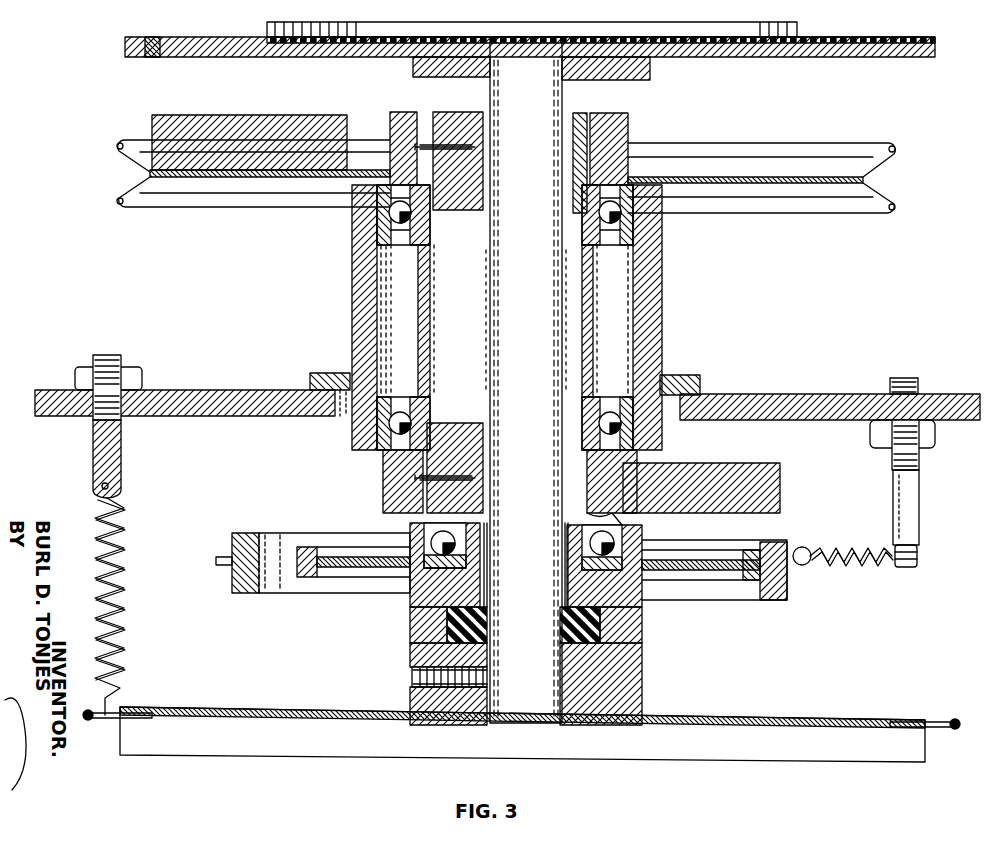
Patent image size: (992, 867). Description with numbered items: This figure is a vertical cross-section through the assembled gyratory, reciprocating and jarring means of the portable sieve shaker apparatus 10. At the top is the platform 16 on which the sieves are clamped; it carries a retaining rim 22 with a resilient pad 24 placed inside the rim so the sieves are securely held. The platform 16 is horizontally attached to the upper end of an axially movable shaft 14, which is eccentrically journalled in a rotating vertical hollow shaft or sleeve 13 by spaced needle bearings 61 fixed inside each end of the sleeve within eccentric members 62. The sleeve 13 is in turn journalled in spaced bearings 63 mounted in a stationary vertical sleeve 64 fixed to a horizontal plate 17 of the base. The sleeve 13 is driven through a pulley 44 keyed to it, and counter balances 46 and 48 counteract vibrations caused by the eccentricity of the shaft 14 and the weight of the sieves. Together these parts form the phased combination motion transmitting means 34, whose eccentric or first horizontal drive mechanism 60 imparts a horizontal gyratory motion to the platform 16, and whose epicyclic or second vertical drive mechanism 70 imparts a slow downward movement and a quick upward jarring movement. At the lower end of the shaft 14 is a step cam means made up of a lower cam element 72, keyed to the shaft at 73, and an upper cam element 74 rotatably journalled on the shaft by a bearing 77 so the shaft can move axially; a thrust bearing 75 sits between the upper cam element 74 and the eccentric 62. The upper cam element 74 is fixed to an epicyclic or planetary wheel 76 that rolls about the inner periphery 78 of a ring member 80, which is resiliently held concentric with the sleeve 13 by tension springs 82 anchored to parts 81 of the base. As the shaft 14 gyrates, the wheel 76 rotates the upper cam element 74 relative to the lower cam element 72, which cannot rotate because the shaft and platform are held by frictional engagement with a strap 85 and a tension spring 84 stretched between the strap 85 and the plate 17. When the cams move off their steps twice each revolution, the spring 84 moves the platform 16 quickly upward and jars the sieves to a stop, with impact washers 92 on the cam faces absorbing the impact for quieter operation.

The portable sieve shaker apparatus 10 is at (925, 622).
The hollow shaft or sleeve 13 is at (431, 330).
The axially movable shaft 14 is at (536, 324).
The platform 16 is at (938, 50).
The horizontal plate 17 is at (222, 390).
The retaining rim 22 is at (688, 37).
The resilient pad 24 is at (606, 37).
The phased combination motion transmitting means 34 is at (868, 240).
The sleeve pulley 44 is at (830, 143).
The counter balance 46 is at (270, 112).
The counter balance 48 is at (770, 482).
The eccentric or first horizontal drive mechanism 60 is at (670, 135).
The needle bearing 61 is at (484, 165).
The eccentric member 62 is at (440, 112).
The bearing 63 is at (377, 218).
The stationary vertical sleeve 64 is at (352, 307).
The epicyclic or second vertical drive mechanism 70 is at (306, 616).
The lower cam element 72 is at (630, 691).
The key 73 is at (418, 680).
The upper cam element 74 is at (636, 604).
The thrust bearing 75 is at (628, 520).
The epicyclic or planetary wheel means 76 is at (368, 547).
The bearing 77 is at (488, 556).
The inner periphery 78 is at (270, 533).
The ring member 80 is at (238, 533).
The part of the base 81 is at (920, 516).
The tension spring 82 is at (842, 570).
The tension spring 84 is at (118, 618).
The strap member 85 is at (840, 720).
The impact washer 92 is at (488, 625).